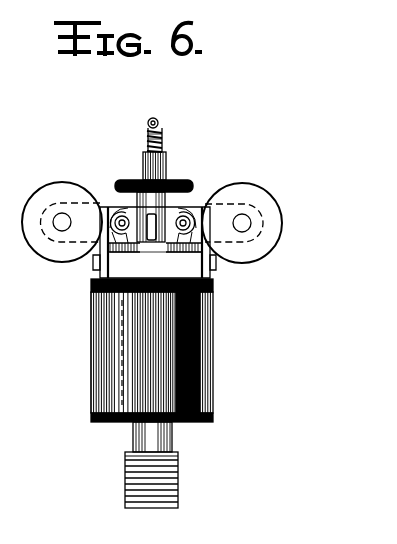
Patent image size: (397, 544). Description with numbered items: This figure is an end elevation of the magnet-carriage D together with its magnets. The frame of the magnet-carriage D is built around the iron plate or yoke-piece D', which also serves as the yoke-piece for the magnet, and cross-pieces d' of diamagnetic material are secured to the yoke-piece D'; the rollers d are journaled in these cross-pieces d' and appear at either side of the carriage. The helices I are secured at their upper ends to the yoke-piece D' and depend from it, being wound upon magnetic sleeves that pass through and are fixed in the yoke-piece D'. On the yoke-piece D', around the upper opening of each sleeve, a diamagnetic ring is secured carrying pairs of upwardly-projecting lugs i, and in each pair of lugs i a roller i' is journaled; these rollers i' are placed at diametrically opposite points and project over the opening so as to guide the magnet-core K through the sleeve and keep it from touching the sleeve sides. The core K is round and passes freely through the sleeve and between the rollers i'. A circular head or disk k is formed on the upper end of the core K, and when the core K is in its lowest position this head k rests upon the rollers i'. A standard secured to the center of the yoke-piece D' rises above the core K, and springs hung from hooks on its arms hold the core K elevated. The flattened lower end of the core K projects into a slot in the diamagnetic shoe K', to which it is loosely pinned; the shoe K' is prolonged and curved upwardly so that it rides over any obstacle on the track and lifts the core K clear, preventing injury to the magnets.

The rollers d is at (25, 233).
The cross-pieces d′ is at (199, 200).
The magnet-carriage D is at (171, 154).
The yoke-piece D′ is at (156, 265).
The circular head k is at (147, 140).
The lugs i is at (115, 200).
The rollers i′ is at (112, 206).
The helices I is at (100, 352).
The magnet-cores K is at (135, 440).
The shoe K′ is at (161, 508).